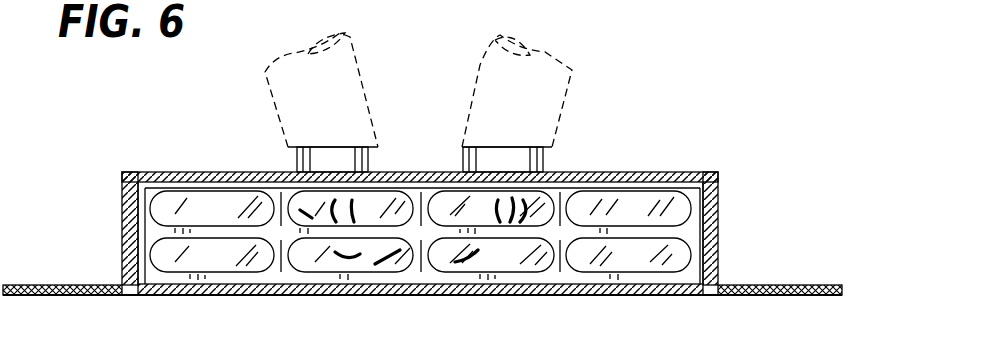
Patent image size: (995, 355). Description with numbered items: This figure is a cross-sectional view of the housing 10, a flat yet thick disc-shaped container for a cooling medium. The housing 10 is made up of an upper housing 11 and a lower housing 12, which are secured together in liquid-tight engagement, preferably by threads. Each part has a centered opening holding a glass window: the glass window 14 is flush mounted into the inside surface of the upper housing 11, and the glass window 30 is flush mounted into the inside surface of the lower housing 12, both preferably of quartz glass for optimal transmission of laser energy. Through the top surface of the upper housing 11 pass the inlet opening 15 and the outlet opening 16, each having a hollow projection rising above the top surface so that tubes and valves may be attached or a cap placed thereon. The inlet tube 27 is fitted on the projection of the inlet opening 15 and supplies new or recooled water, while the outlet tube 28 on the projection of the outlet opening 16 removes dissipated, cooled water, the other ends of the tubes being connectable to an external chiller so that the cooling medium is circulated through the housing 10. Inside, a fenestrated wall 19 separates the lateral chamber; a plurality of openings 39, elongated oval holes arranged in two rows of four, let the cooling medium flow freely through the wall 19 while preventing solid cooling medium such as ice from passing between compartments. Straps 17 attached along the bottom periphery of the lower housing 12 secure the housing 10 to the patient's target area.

The housing 10 is at (136, 76).
The upper housing 11 is at (156, 171).
The lower housing 12 is at (163, 296).
The glass window 14 is at (420, 172).
The inlet opening 15 is at (297, 160).
The outlet opening 16 is at (543, 160).
The straps 17 is at (64, 284).
The fenestrated wall 19 is at (558, 264).
The inlet tube 27 is at (365, 75).
The outlet tube 28 is at (478, 62).
The glass window 30 is at (405, 296).
The openings 39 is at (634, 205).